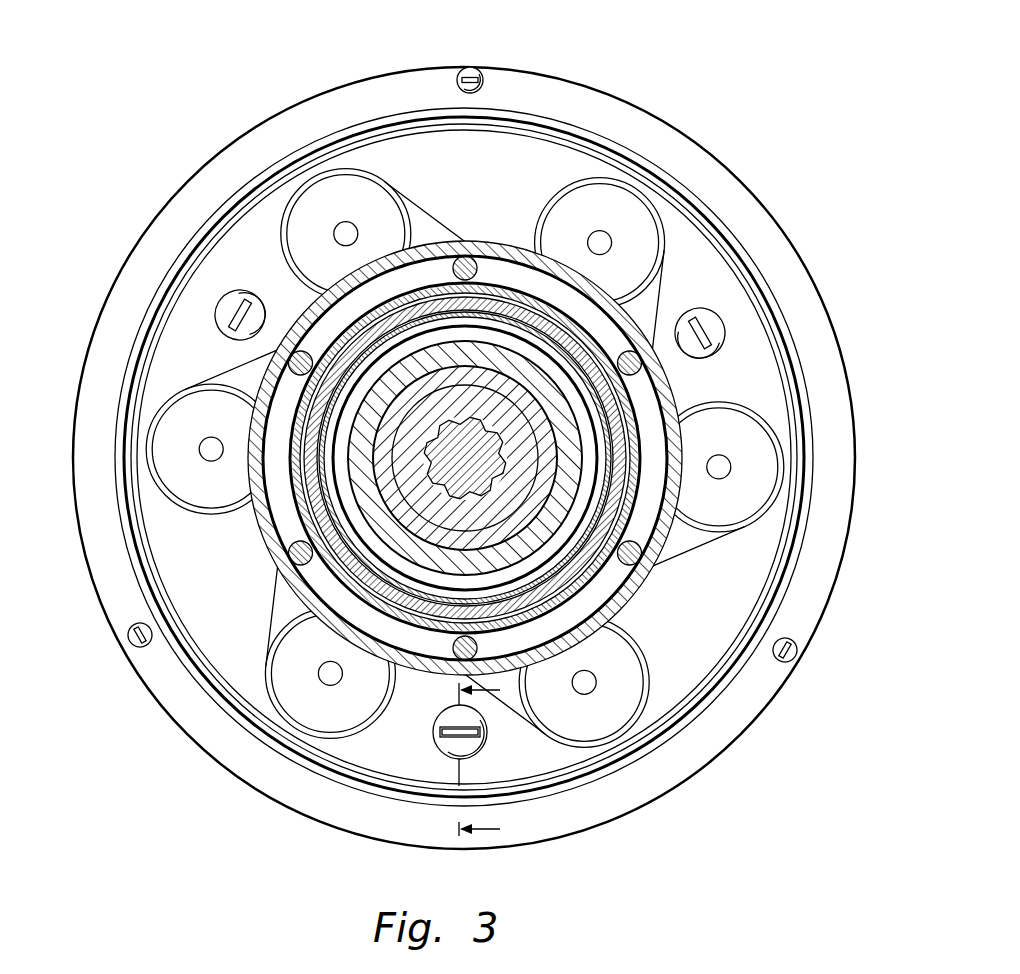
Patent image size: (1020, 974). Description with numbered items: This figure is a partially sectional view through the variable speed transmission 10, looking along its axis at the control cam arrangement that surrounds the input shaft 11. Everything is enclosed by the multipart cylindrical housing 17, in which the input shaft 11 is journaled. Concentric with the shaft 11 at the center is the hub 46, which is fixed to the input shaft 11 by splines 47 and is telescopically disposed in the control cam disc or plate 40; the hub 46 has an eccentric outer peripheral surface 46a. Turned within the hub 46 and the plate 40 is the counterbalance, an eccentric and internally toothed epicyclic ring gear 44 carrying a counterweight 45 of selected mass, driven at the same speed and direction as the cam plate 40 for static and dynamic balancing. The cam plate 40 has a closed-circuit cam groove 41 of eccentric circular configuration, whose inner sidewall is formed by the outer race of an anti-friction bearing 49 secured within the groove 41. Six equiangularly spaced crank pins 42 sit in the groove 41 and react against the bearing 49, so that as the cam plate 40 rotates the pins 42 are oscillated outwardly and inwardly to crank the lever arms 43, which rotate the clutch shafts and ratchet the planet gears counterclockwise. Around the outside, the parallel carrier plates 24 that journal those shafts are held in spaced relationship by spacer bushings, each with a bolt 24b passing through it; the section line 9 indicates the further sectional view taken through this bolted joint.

The section line 9- 9 is at (486, 760).
The variable speed transmission 10 is at (684, 92).
The input shaft 11 is at (453, 468).
The cylindrical housing 17 is at (596, 86).
The carrier plates 24 is at (460, 194).
The bolt 24b is at (446, 748).
The control cam disc or plate 40 is at (626, 592).
The cam groove 41 is at (553, 638).
The crank pins 42 is at (651, 366).
The lever arms 43 is at (569, 721).
The counterbalance ring gear 44 is at (456, 388).
The counterweight 45 is at (453, 365).
The hub 46 is at (453, 529).
The eccentric outer peripheral surface 46a is at (461, 312).
The splines 47 is at (437, 491).
The anti-friction bearing 49 is at (531, 300).